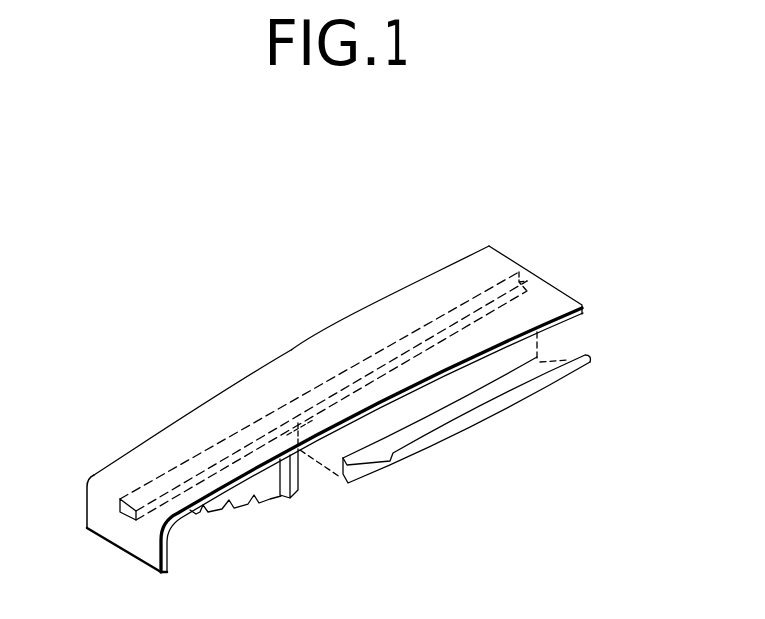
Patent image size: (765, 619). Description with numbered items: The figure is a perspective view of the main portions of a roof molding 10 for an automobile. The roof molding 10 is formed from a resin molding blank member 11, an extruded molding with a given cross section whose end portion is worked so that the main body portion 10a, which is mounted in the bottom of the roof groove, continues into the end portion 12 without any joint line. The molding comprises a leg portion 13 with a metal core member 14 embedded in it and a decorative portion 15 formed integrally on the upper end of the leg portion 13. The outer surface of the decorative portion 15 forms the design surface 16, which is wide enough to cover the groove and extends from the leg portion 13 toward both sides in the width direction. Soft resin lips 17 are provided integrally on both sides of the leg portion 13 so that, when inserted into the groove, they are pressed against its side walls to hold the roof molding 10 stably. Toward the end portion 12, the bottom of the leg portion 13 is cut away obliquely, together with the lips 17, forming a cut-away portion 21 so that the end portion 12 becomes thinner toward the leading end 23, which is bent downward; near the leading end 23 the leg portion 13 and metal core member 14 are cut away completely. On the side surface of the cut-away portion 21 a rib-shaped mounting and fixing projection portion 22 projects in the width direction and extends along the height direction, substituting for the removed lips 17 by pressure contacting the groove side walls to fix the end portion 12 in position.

The roof molding 10 is at (522, 232).
The main body portion 10a is at (477, 263).
The resin molding blank member 11 is at (350, 325).
The end portion 12 is at (244, 373).
The leg portion 13 is at (525, 343).
The metal core member 14 is at (520, 262).
The decorative portion 15 is at (417, 298).
The design surface 16 is at (180, 424).
The lips 17 is at (497, 414).
The cut-away portion 21 is at (212, 508).
The mounting and fixing projection portion 22 is at (298, 488).
The leading end 23 is at (118, 533).